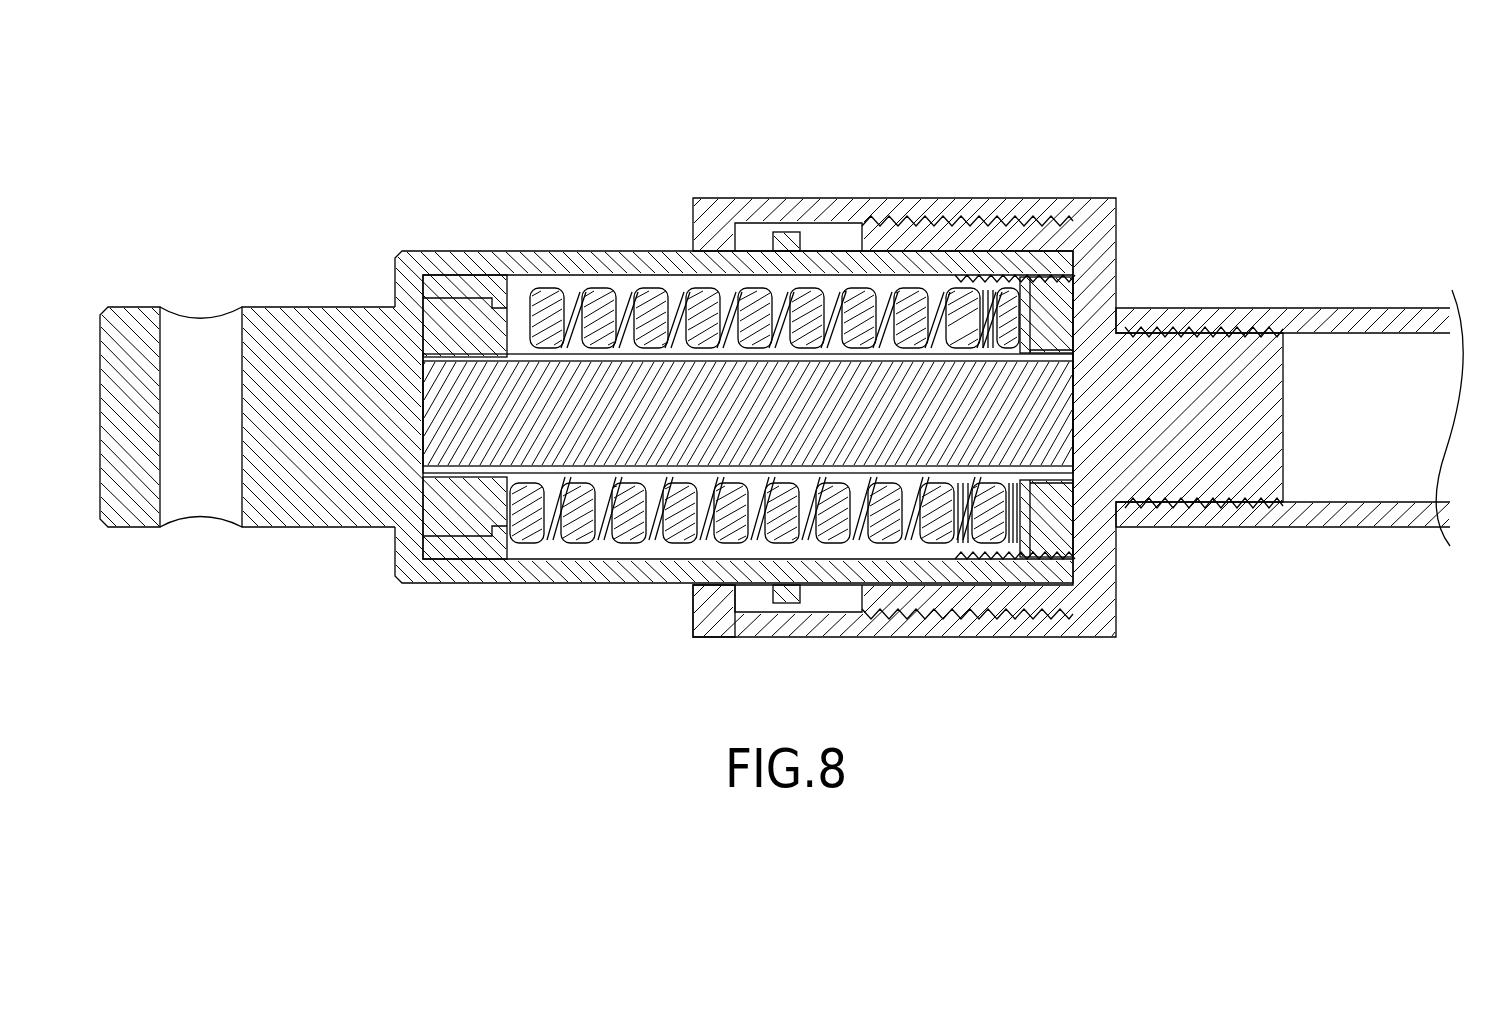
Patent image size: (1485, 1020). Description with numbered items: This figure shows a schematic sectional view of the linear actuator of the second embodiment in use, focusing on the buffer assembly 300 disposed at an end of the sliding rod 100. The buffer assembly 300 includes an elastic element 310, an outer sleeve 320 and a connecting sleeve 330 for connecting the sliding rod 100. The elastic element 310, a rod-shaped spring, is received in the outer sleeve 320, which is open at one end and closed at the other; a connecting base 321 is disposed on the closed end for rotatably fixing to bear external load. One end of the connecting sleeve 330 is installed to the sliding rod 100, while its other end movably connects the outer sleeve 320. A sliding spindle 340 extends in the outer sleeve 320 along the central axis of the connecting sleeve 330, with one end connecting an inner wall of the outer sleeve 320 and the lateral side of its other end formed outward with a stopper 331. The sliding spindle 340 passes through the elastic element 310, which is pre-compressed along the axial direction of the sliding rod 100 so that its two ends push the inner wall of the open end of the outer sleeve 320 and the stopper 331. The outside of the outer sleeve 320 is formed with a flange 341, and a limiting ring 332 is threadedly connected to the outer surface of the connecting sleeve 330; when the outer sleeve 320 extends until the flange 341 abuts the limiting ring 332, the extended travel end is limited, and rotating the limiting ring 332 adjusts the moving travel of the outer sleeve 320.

The sliding rod 100 is at (1352, 280).
The buffer assembly 300 is at (463, 152).
The elastic element 310 is at (813, 305).
The outer sleeve 320 is at (602, 250).
The connecting base 321 is at (298, 320).
The connecting sleeve 330 is at (1084, 227).
The stopper 331 is at (457, 320).
The limiting ring 332 is at (716, 590).
The sliding spindle 340 is at (574, 440).
The flange 341 is at (783, 232).